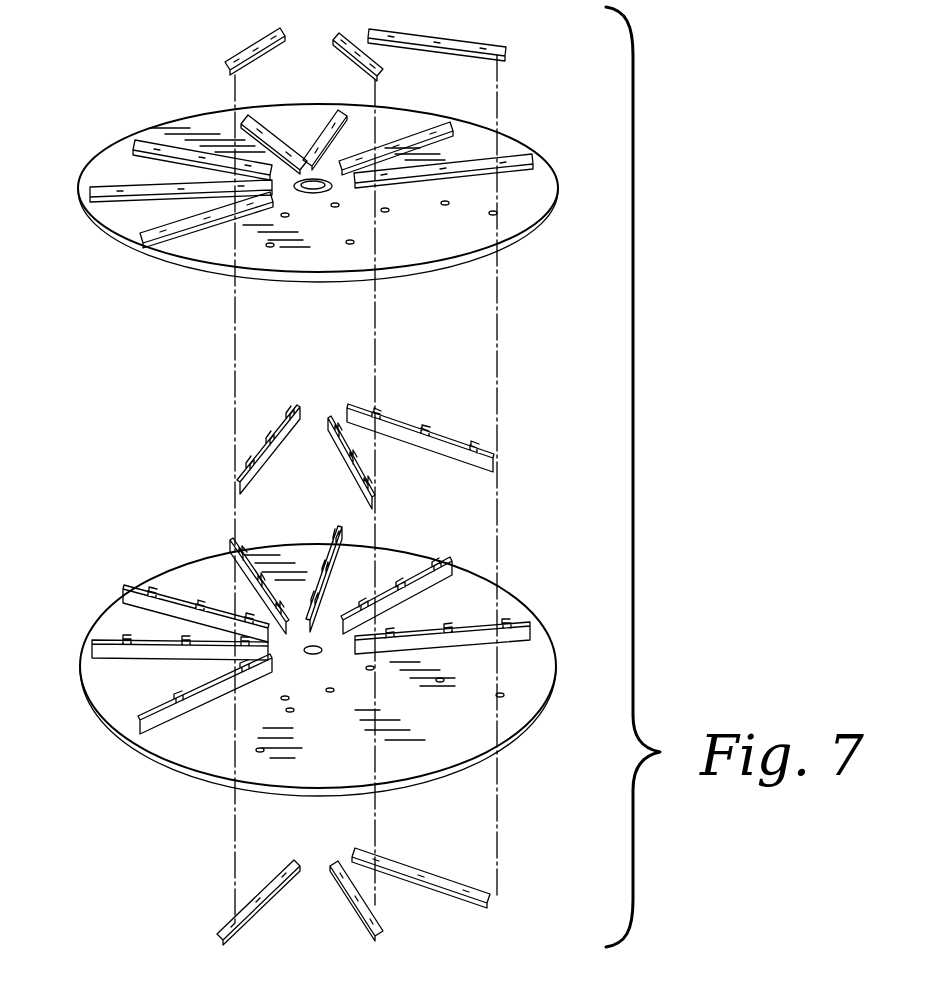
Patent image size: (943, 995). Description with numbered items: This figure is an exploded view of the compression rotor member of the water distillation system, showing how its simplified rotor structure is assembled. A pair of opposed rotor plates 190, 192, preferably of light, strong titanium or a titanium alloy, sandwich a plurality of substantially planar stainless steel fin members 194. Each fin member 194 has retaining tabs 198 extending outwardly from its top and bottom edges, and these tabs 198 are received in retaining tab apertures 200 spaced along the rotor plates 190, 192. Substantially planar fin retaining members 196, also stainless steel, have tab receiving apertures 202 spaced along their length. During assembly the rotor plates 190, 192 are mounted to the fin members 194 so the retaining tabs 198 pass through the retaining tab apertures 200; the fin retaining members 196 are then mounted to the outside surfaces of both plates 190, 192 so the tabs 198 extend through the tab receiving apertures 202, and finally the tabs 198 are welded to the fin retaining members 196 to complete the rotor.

The rotor plate 190 is at (555, 190).
The rotor plate 192 is at (487, 607).
The fin member 194 is at (280, 530).
The fin retaining member 196 is at (368, 32).
The retaining tab 198 is at (345, 455).
The retaining tab aperture 200 is at (265, 262).
The tab receiving aperture 202 is at (322, 152).